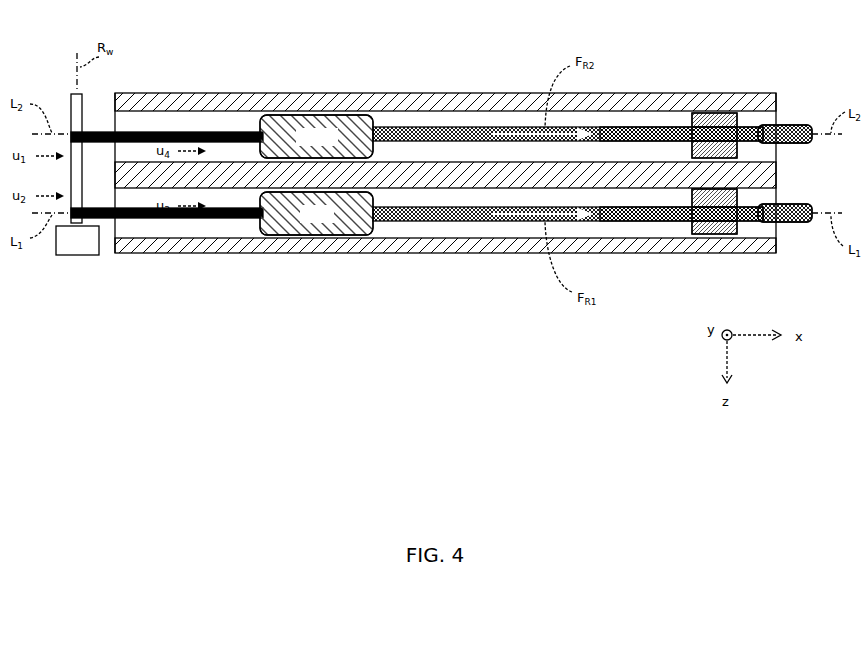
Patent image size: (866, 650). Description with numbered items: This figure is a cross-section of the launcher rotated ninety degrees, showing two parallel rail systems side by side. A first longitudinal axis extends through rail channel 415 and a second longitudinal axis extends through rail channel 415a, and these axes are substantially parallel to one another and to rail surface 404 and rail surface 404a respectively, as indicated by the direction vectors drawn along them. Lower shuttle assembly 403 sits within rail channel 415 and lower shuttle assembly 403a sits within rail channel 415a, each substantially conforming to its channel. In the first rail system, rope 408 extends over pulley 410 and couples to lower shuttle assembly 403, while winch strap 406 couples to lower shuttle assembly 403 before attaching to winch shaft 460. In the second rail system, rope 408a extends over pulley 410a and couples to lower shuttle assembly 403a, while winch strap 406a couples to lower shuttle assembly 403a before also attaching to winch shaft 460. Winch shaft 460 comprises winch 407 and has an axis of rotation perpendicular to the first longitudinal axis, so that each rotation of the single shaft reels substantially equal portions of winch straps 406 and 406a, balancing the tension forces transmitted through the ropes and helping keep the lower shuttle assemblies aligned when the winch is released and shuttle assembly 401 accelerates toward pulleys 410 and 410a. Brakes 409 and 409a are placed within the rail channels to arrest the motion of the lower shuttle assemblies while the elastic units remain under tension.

The shuttle assembly 401 is at (317, 66).
The lower shuttle assembly 403 is at (316, 213).
The lower shuttle assembly 403a is at (316, 136).
The rail surface 404 is at (681, 221).
The rail surface 404a is at (681, 143).
The winch strap 406 is at (196, 219).
The winch strap 406a is at (194, 131).
The winch 407 is at (77, 240).
The rope 408 is at (468, 222).
The rope 408a is at (466, 128).
The brake 409 is at (705, 236).
The brake 409a is at (704, 113).
The pulley 410 is at (795, 224).
The pulley 410a is at (790, 125).
The rail channel 415 is at (392, 232).
The rail channel 415a is at (392, 120).
The winch shaft 460 is at (71, 115).